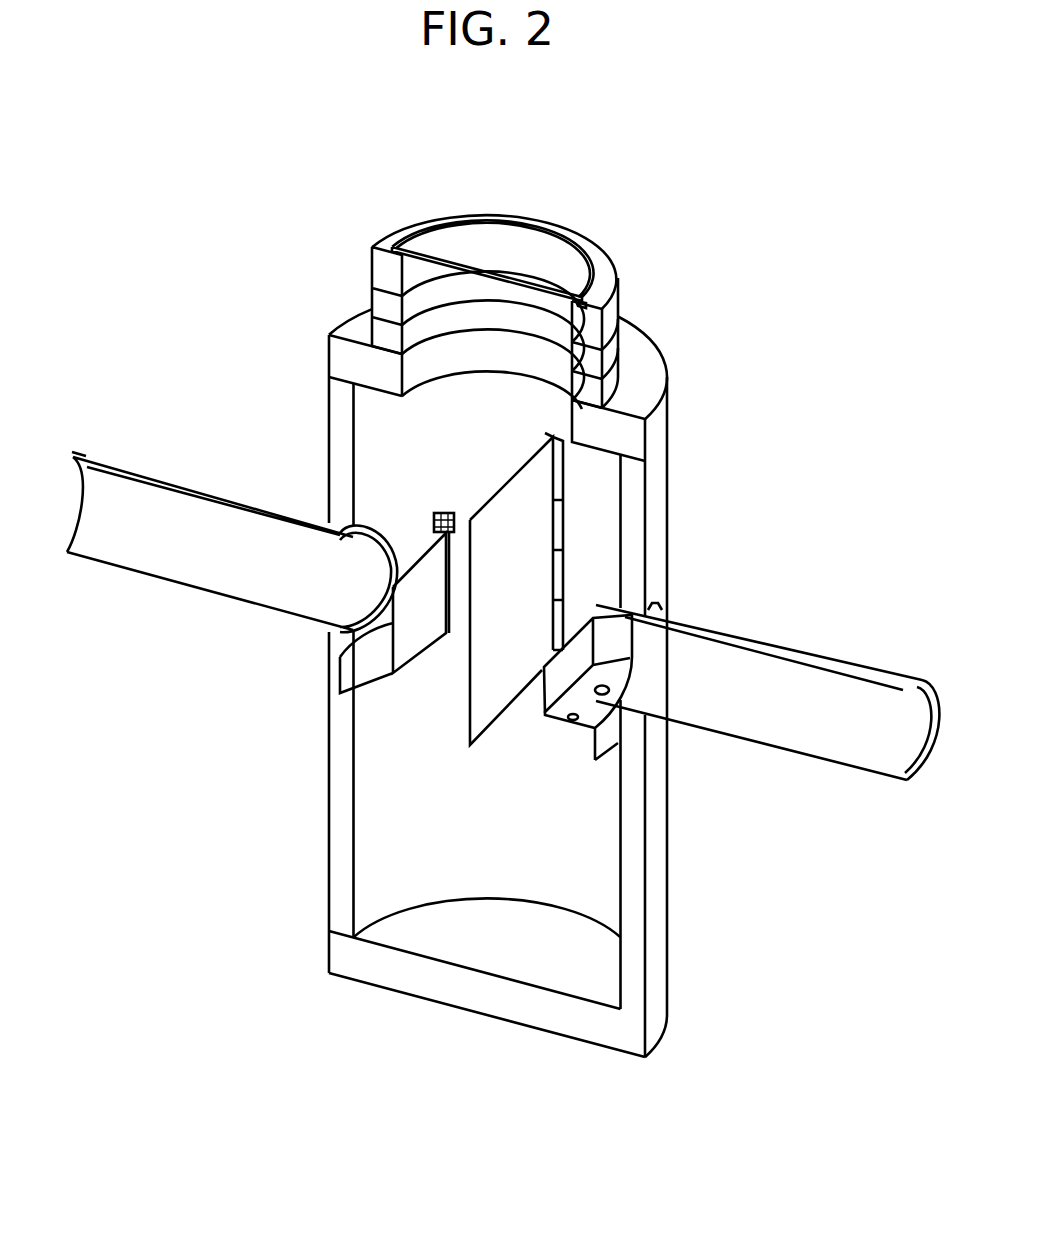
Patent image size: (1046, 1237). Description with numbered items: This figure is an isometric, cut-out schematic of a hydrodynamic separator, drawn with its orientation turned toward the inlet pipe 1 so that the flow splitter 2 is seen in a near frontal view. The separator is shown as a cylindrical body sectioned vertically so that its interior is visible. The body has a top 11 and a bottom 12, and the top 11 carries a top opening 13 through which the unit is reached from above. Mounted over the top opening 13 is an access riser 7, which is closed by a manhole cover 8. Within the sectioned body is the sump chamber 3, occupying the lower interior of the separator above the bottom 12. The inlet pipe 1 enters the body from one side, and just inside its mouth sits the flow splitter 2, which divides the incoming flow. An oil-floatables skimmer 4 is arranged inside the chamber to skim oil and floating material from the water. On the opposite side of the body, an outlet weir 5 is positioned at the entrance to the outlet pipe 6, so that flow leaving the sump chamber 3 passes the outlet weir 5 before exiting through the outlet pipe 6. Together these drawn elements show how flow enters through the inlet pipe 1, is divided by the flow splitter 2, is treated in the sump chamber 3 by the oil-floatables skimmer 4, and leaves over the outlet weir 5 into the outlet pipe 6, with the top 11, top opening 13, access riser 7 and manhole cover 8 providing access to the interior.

The inlet pipe 1 is at (313, 505).
The flow splitter 2 is at (418, 627).
The sump chamber 3 is at (533, 853).
The oil-floatables skimmer 4 is at (518, 603).
The outlet weir 5 is at (597, 748).
The outlet pipe 6 is at (765, 730).
The access riser 7 is at (607, 325).
The manhole cover 8 is at (520, 255).
The top 11 is at (655, 422).
The bottom 12 is at (372, 967).
The top opening 13 is at (458, 390).